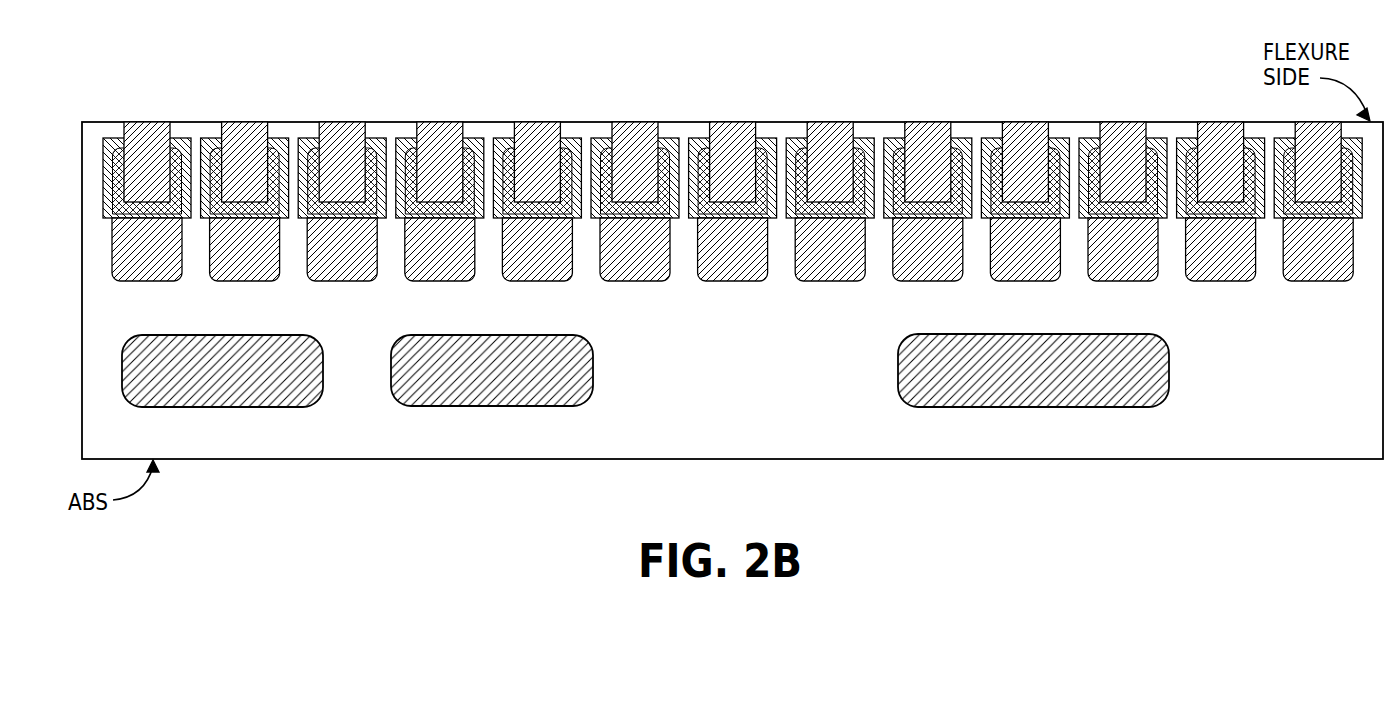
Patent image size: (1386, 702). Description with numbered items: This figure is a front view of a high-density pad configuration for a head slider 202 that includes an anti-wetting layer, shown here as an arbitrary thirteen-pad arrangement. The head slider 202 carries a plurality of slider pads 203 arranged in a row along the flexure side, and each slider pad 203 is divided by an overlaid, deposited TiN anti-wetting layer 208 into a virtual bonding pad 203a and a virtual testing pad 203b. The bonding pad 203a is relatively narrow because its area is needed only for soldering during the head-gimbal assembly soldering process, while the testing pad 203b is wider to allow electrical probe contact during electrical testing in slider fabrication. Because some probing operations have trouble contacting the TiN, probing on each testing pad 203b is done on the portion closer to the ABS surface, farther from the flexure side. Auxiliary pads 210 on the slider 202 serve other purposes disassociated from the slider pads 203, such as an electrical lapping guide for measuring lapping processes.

The head slider 202 is at (770, 406).
The slider pad 203 is at (76, 122).
The bonding pad 203a is at (150, 128).
The testing pad 203b is at (125, 281).
The anti-wetting layer 208 is at (187, 140).
The auxiliary pad 210 is at (418, 397).